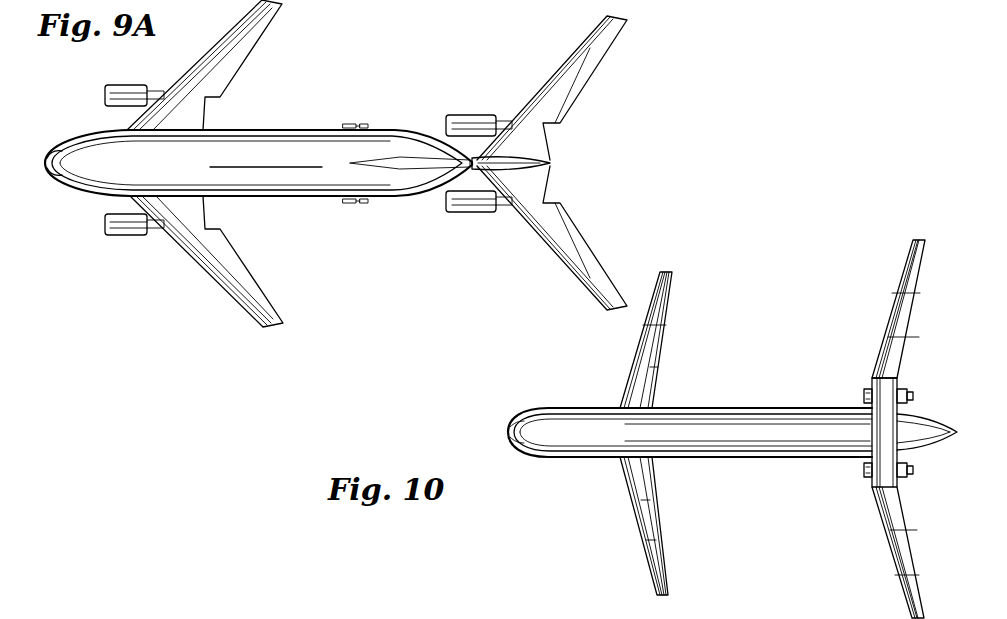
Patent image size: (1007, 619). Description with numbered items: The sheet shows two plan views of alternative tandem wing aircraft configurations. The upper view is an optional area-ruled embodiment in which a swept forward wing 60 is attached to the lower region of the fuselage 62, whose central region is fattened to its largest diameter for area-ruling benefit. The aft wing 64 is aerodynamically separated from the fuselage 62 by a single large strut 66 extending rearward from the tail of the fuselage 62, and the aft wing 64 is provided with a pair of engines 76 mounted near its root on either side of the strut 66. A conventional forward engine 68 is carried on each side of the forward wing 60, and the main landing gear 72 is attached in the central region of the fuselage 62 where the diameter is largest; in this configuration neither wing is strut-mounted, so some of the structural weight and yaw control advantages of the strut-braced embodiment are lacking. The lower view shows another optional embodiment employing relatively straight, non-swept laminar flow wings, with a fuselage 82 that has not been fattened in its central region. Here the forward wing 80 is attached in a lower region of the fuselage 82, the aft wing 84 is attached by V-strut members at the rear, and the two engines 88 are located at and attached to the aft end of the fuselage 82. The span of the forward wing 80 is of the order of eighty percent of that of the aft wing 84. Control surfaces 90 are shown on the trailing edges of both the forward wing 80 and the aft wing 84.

In FIG. 9A, the forward wing 60 is at (198, 60).
In FIG. 9A, the fuselage 62 is at (287, 130).
In FIG. 9A, the aft wing 64 is at (552, 80).
In FIG. 9A, the strut 66 is at (437, 172).
In FIG. 9A, the forward engine 68 is at (126, 85).
In FIG. 9A, the main landing gear 72 is at (362, 123).
In FIG. 9A, the engines 76 is at (468, 115).
In FIG. 10, the forward wing 80 is at (632, 368).
In FIG. 10, the fuselage 82 is at (740, 408).
In FIG. 10, the aft wing 84 is at (894, 308).
In FIG. 10, the engines 88 is at (905, 389).
In FIG. 10, the control surfaces 90 is at (663, 341).